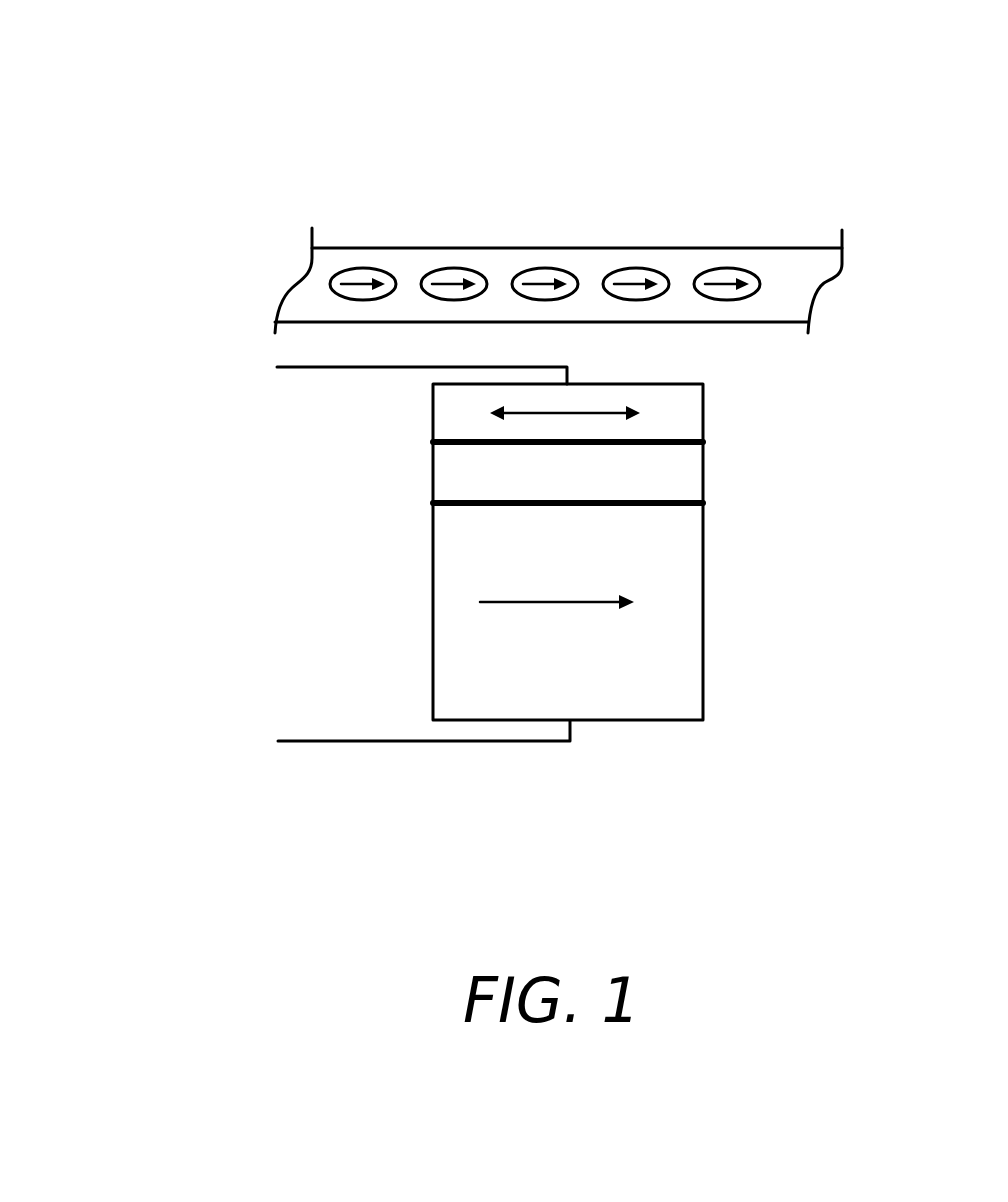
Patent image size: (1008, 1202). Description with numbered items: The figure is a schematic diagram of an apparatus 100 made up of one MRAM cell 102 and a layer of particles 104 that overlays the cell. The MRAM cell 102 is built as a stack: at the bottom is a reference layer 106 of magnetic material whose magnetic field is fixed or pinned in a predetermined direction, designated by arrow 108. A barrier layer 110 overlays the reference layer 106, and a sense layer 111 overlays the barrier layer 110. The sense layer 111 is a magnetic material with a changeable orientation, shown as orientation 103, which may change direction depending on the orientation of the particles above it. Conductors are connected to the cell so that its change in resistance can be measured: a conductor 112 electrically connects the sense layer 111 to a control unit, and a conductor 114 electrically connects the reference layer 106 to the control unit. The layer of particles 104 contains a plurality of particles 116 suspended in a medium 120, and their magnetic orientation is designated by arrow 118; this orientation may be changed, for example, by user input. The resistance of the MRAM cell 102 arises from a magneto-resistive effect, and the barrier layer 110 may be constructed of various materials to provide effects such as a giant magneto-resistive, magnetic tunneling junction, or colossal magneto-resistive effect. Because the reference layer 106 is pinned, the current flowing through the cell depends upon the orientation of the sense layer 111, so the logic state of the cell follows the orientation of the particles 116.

The apparatus 100 is at (444, 124).
The MRAM cell 102 is at (190, 501).
The orientation of the sense layer 103 is at (625, 412).
The layer of particles 104 is at (293, 284).
The reference layer 106 is at (703, 597).
The arrow 108 is at (532, 602).
The barrier layer 110 is at (703, 472).
The sense layer 111 is at (703, 419).
The conductor 112 is at (333, 368).
The conductor 114 is at (335, 740).
The particles 116 is at (543, 272).
The arrow 118 is at (452, 274).
The medium 120 is at (779, 270).